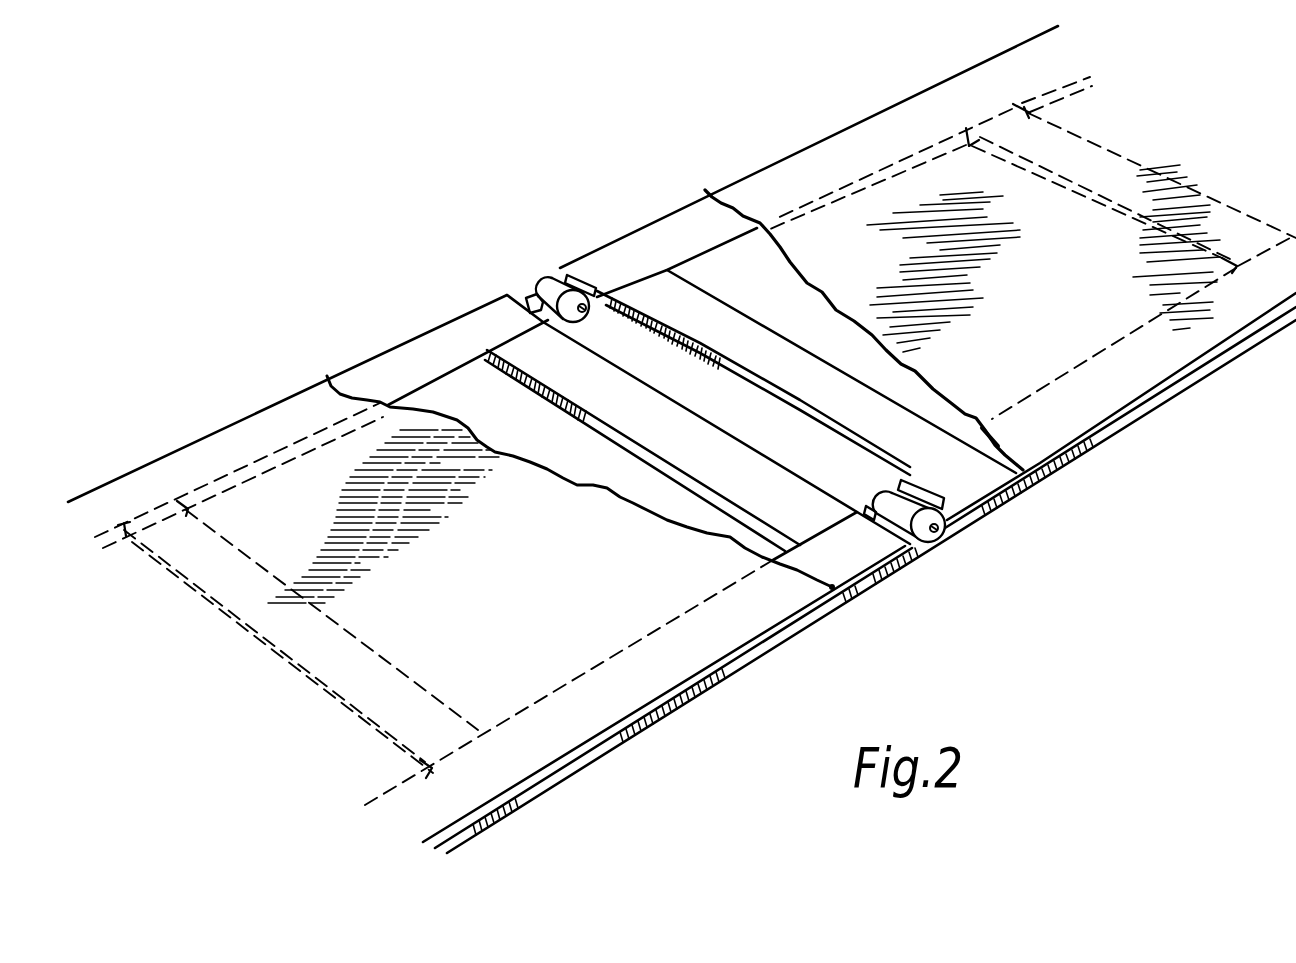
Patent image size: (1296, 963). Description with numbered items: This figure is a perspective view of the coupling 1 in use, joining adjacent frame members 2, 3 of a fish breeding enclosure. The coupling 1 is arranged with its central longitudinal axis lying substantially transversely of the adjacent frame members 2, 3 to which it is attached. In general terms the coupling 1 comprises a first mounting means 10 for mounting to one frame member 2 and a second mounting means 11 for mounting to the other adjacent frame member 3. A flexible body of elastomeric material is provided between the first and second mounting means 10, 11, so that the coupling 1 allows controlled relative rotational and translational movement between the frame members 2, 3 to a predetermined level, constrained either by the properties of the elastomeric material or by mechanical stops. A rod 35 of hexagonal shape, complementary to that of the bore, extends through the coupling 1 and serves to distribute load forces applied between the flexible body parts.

The coupling 1 is at (752, 410).
The frame member 2 is at (640, 257).
The frame member 3 is at (433, 347).
The first mounting means 10 is at (531, 300).
The second mounting means 11 is at (579, 277).
The rod 35 is at (587, 314).